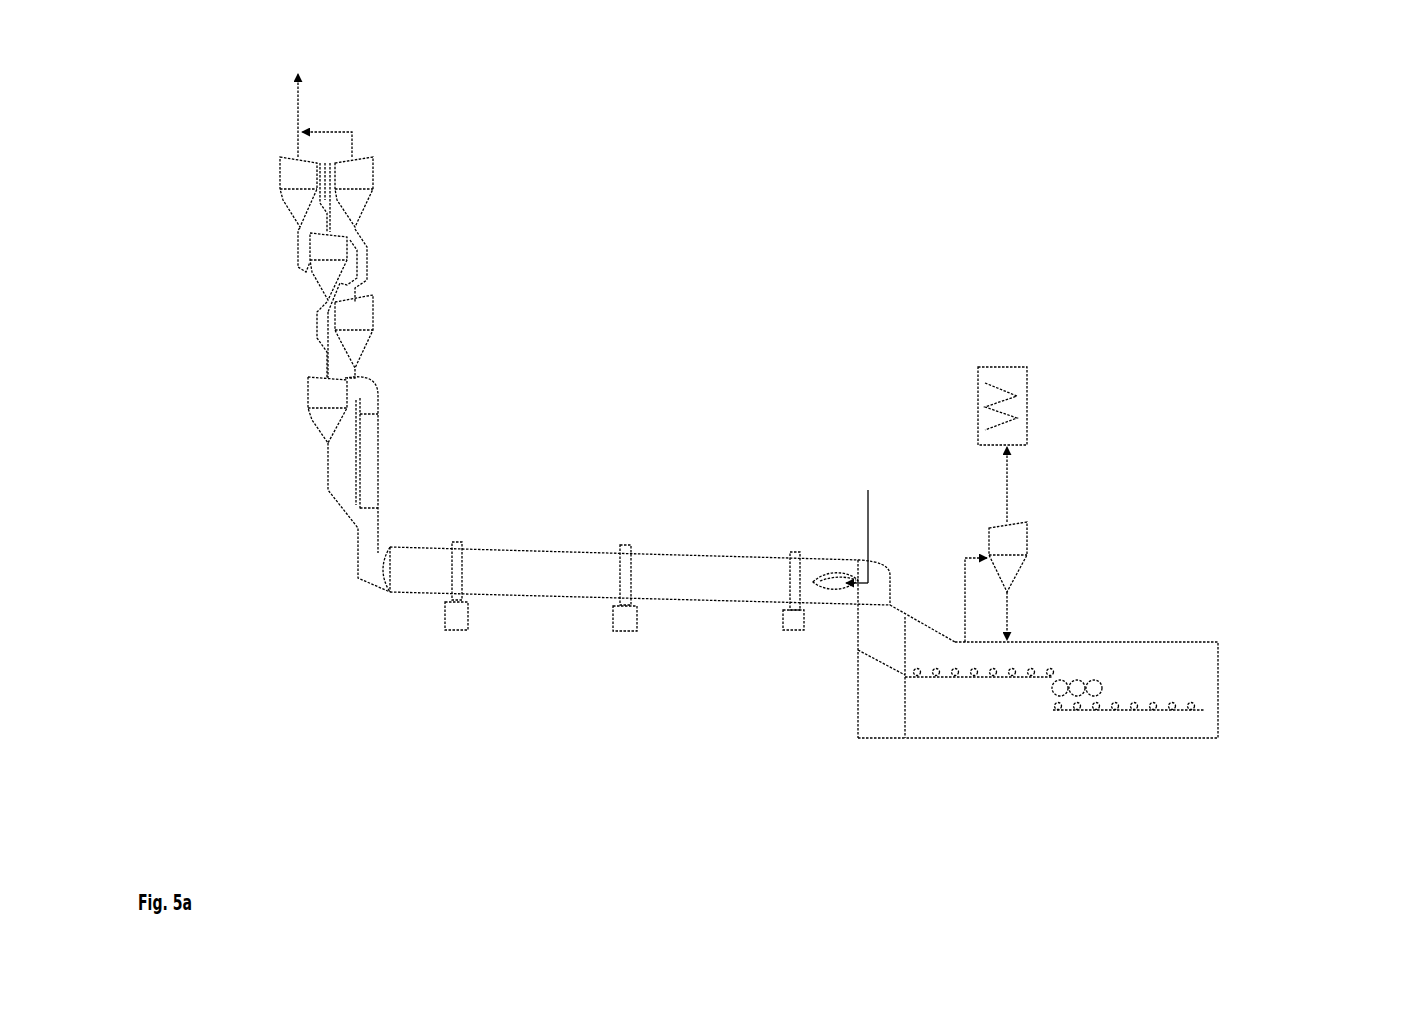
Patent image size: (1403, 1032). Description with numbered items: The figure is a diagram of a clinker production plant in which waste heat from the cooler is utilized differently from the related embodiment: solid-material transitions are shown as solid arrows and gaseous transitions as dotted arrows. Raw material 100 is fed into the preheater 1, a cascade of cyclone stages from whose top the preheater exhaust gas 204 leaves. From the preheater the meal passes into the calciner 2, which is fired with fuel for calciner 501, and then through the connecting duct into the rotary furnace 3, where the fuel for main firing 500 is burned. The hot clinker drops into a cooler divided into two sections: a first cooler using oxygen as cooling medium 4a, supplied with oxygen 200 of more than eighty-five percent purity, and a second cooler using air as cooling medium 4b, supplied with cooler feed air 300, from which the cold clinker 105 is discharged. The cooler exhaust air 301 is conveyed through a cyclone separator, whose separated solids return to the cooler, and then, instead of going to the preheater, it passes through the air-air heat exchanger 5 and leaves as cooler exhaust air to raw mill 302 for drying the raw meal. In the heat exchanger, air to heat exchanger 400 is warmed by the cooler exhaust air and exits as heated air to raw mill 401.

The preheater 1 is at (347, 300).
The calciner 2 is at (374, 484).
The rotary furnace 3 is at (636, 586).
The cooler using oxygen as cooling medium 4a is at (874, 649).
The cooler using air as cooling medium 4b is at (1061, 690).
The air-air heat exchanger 5 is at (977, 404).
The raw material 100 is at (330, 230).
The cold clinker 105 is at (1207, 717).
The oxygen ( 85%) 200 is at (880, 740).
The preheater exhaust gas 204 is at (311, 93).
The cooler feed air 300 is at (1007, 740).
The cooler exhaust air 301 is at (986, 544).
The cooler exhaust air to raw mill 302 is at (1007, 367).
The air to heat exchanger 400 is at (1030, 428).
The heated air to raw mill 401 is at (1027, 383).
The fuel for main firing 500 is at (856, 513).
The fuel for calciner 501 is at (462, 516).